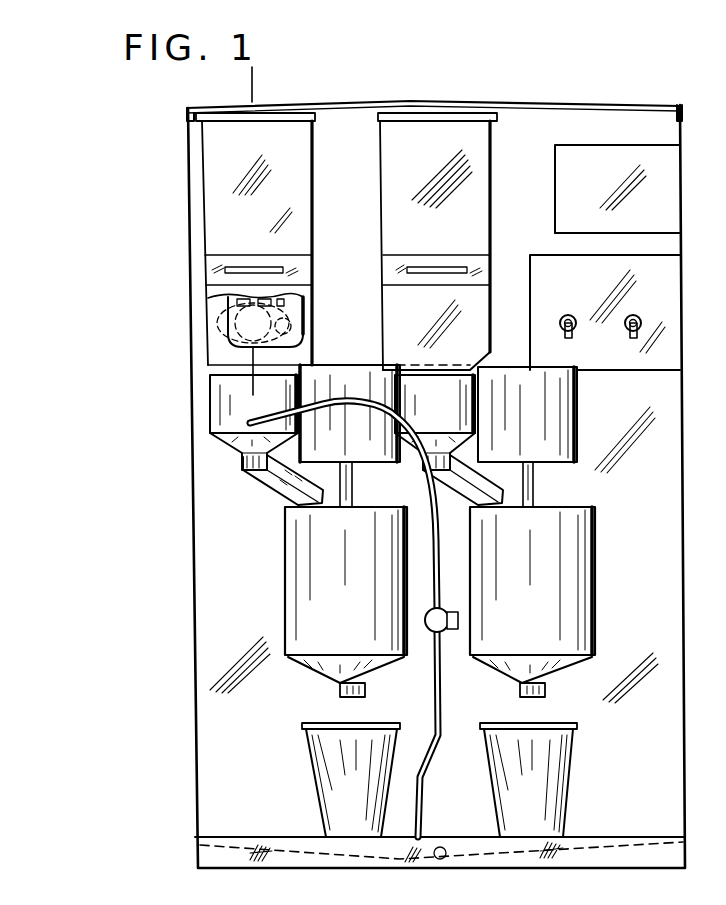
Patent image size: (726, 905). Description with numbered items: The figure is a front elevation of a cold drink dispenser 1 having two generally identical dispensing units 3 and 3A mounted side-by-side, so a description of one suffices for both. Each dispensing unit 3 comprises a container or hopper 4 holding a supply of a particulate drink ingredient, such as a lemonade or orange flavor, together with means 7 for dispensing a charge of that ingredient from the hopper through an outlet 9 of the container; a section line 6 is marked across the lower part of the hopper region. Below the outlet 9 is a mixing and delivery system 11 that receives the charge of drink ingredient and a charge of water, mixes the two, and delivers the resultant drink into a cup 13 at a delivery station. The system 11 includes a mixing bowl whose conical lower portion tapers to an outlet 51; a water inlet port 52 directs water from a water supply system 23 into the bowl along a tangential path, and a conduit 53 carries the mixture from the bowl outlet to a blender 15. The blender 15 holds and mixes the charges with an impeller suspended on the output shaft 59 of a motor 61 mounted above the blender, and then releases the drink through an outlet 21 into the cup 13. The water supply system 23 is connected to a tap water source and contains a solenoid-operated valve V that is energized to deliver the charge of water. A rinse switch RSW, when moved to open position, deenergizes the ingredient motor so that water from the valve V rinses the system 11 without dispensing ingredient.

The cold drink dispenser 1 is at (613, 88).
The dispensing unit 3 is at (297, 100).
The dispensing unit 3A is at (440, 93).
The container or hopper 4 is at (313, 155).
The section line 6- 6 is at (278, 88).
The means for dispensing 7 is at (300, 313).
The outlet of the container 9 is at (240, 323).
The mixing and delivery system 11 is at (222, 582).
The cup 13 is at (312, 782).
The blender 15 is at (285, 590).
The outlet 21 is at (350, 697).
The water supply system 23 is at (441, 703).
The outlet 51 is at (243, 460).
The water inlet port 52 is at (256, 420).
The conduit 53 is at (262, 488).
The output shaft 59 is at (357, 487).
The motor 61 is at (358, 375).
The solenoid-operated valve V is at (448, 606).
The rinse switch RSW is at (571, 315).